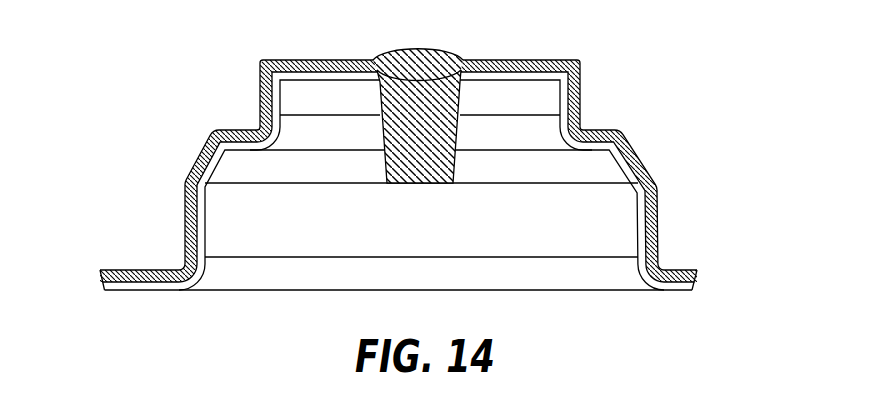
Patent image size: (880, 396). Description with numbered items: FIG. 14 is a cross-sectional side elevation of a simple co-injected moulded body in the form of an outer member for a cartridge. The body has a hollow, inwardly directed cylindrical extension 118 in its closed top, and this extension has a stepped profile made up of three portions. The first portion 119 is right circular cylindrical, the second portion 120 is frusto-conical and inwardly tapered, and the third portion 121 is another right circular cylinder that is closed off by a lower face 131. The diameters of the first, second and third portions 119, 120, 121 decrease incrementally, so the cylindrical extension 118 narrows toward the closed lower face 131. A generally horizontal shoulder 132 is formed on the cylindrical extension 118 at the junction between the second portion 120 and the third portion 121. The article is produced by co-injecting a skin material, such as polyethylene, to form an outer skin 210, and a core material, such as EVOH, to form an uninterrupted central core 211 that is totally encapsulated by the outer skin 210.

The cylindrical extension 118 is at (238, 86).
The first portion 119 is at (660, 200).
The second portion 120 is at (650, 171).
The third portion 121 is at (584, 92).
The lower face 131 is at (506, 61).
The shoulder 132 is at (238, 129).
The outer skin 210 is at (136, 270).
The central core 211 is at (643, 158).